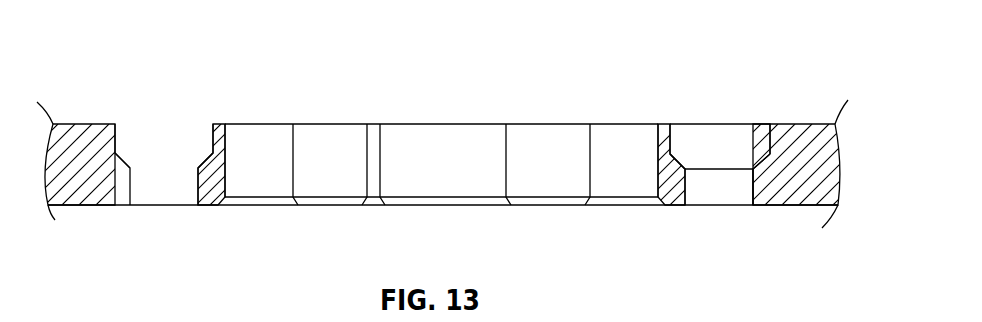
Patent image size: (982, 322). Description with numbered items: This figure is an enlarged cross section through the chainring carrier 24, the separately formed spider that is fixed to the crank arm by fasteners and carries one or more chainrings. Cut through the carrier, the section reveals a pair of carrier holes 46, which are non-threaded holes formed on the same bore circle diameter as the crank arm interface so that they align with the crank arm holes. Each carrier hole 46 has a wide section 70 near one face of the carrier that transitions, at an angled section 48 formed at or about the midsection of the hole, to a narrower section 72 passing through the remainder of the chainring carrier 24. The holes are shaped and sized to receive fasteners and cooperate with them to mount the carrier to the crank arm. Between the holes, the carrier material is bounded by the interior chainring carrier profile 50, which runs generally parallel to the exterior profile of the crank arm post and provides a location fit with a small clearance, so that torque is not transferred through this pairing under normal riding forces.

The chainring carrier 24 is at (797, 205).
The carrier holes 46 is at (134, 90).
The angled section 48 is at (205, 160).
The interior chainring carrier profile 50 is at (226, 175).
The wide section 70 is at (768, 142).
The narrower section 72 is at (753, 195).